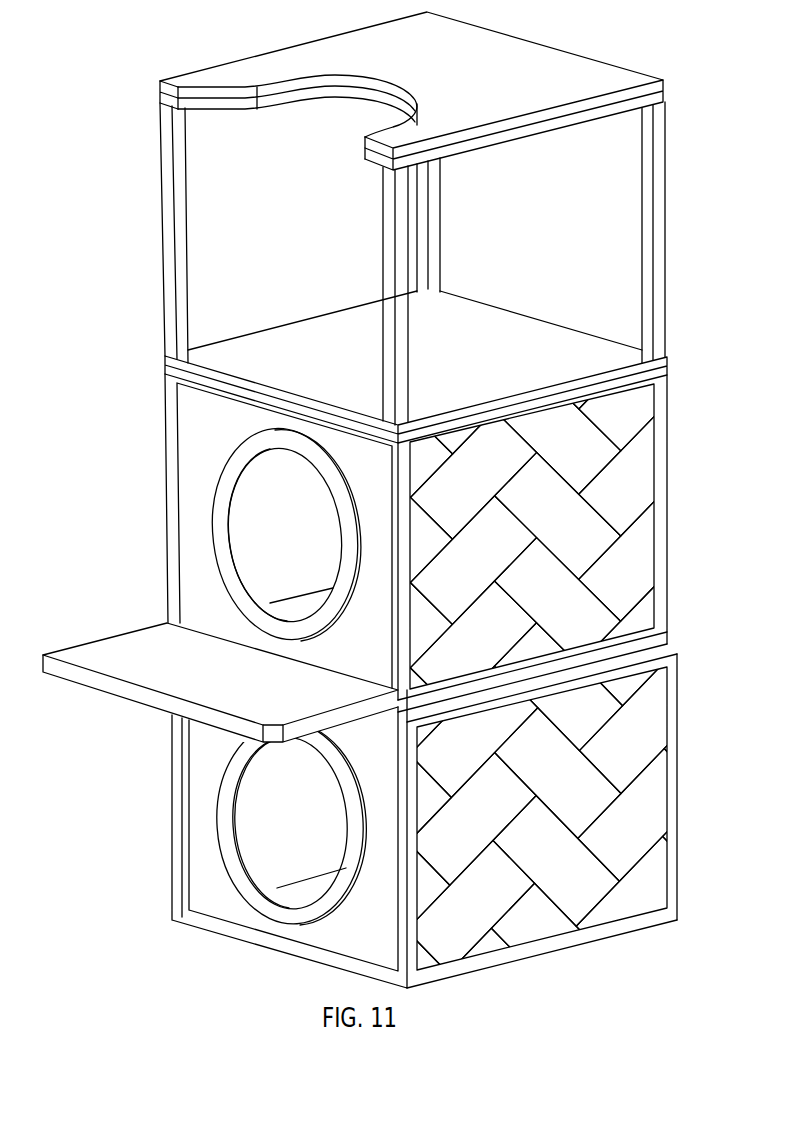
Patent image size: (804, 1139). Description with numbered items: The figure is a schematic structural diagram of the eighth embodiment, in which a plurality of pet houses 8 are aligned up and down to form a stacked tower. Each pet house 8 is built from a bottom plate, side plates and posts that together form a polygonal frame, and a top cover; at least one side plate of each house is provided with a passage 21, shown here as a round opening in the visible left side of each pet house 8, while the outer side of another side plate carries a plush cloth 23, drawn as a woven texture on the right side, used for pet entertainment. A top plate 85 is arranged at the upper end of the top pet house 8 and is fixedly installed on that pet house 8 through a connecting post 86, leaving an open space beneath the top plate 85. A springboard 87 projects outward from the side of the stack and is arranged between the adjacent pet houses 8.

The pet house 8 is at (210, 422).
The passage 21 is at (282, 843).
The plush cloth 23 is at (568, 873).
The top plate 85 is at (483, 115).
The connecting post 86 is at (441, 200).
The springboard 87 is at (163, 682).